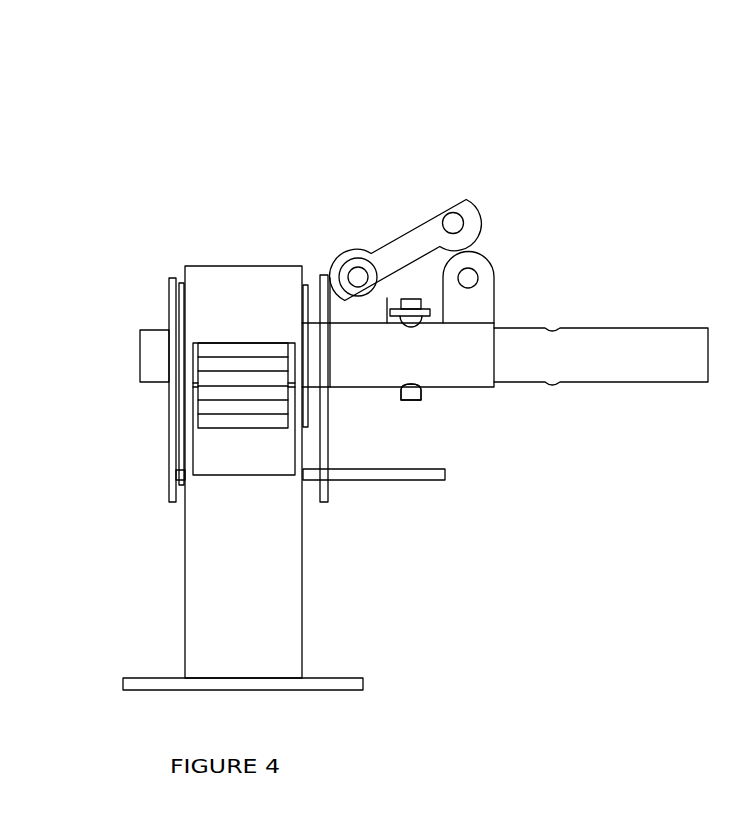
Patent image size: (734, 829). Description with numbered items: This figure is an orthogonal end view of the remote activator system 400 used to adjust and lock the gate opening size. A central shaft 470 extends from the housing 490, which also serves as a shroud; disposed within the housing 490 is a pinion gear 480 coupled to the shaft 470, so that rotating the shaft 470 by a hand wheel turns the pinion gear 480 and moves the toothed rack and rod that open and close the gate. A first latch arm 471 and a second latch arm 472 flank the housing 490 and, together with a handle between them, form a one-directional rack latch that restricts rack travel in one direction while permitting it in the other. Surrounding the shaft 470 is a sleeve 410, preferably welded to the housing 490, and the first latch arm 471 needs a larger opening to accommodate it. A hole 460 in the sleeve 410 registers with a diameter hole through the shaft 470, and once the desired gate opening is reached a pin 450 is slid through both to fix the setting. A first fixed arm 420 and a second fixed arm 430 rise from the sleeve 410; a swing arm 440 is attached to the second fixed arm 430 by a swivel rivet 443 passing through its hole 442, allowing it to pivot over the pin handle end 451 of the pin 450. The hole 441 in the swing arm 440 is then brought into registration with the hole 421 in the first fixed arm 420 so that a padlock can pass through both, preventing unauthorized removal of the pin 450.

The drive assembly 400 is at (223, 183).
The sleeve 410 is at (398, 355).
The first fixed arm 420 is at (467, 302).
The hole in first fixed arm 421 is at (478, 275).
The second fixed arm 430 is at (345, 313).
The swing arm 440 is at (404, 238).
The hole in swing arm 441 is at (453, 223).
The hole in swing arm 442 is at (358, 277).
The swivel rivet 443 is at (345, 265).
The pin 450 is at (410, 400).
The pin handle end 451 is at (423, 307).
The hole in sleeve 460 is at (418, 382).
The shaft 470 is at (601, 356).
The first latch arm 471 is at (328, 460).
The second latch arm 472 is at (168, 287).
The pinion gear 480 is at (227, 393).
The housing 490 is at (243, 478).